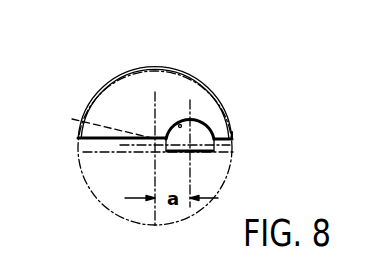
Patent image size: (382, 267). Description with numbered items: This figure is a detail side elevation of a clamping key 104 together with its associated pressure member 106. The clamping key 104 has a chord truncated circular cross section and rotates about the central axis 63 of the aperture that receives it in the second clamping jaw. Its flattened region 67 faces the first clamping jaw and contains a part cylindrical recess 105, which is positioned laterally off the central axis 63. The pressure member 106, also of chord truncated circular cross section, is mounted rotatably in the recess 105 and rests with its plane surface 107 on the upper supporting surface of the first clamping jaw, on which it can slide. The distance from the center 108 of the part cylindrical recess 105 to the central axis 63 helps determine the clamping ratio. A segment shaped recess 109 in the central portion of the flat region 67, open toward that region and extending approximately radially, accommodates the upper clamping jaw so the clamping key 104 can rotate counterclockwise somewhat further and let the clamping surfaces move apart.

The central axis 63 is at (146, 125).
The clamping key 104 is at (200, 97).
The part cylindrical recess 105 is at (176, 124).
The pressure member 106 is at (224, 123).
The plane surface 107 is at (228, 153).
The center of the part cylindrical recess 108 is at (208, 127).
The segment shaped recess 109 is at (82, 126).
The flattened region 67 is at (88, 177).